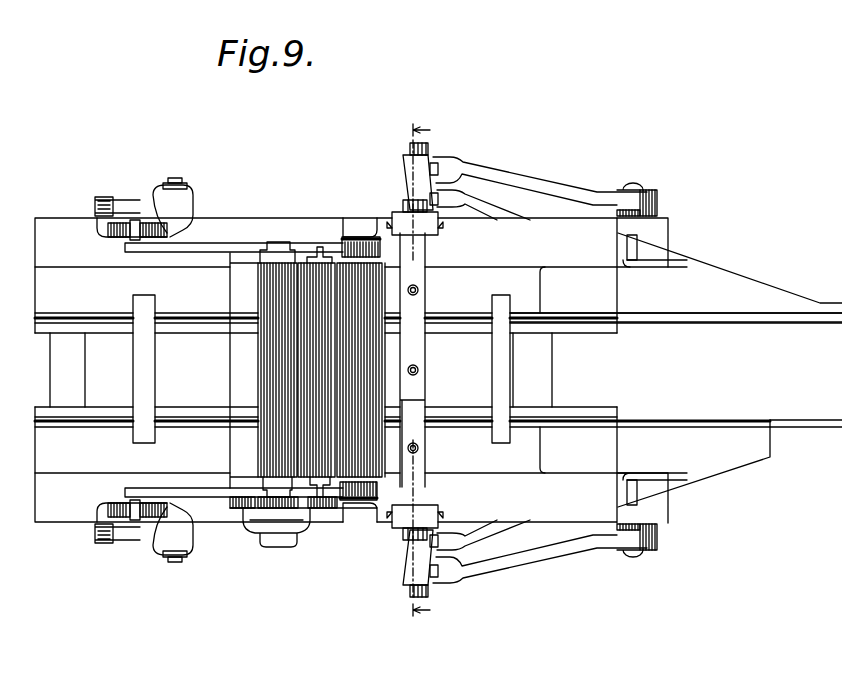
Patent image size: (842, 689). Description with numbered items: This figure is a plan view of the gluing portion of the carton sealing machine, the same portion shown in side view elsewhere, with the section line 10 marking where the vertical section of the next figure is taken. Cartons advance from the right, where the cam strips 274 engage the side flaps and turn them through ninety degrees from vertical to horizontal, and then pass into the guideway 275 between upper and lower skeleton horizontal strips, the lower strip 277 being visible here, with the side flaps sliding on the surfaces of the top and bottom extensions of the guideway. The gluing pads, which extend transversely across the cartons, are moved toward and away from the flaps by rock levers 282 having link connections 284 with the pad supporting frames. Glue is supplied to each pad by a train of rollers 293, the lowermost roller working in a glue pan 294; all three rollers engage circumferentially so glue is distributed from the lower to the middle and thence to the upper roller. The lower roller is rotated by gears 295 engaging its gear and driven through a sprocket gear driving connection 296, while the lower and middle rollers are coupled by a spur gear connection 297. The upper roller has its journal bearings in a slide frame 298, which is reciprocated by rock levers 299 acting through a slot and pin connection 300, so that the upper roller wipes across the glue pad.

The section line 10 is at (423, 372).
The cam strips 274 is at (763, 422).
The guideway 275 is at (617, 323).
The lower skeleton horizontal strip 277 is at (535, 332).
The rock levers 282 is at (506, 171).
The link connections 284 is at (406, 178).
The train of rollers 293 is at (258, 463).
The glue pan 294 is at (233, 290).
The gears 295 is at (245, 508).
The sprocket gear driving connection 296 is at (309, 528).
The spur gear connection 297 is at (305, 513).
The slide frame 298 is at (161, 250).
The rock levers 299 is at (195, 203).
The slot and pin connection 300 is at (138, 237).